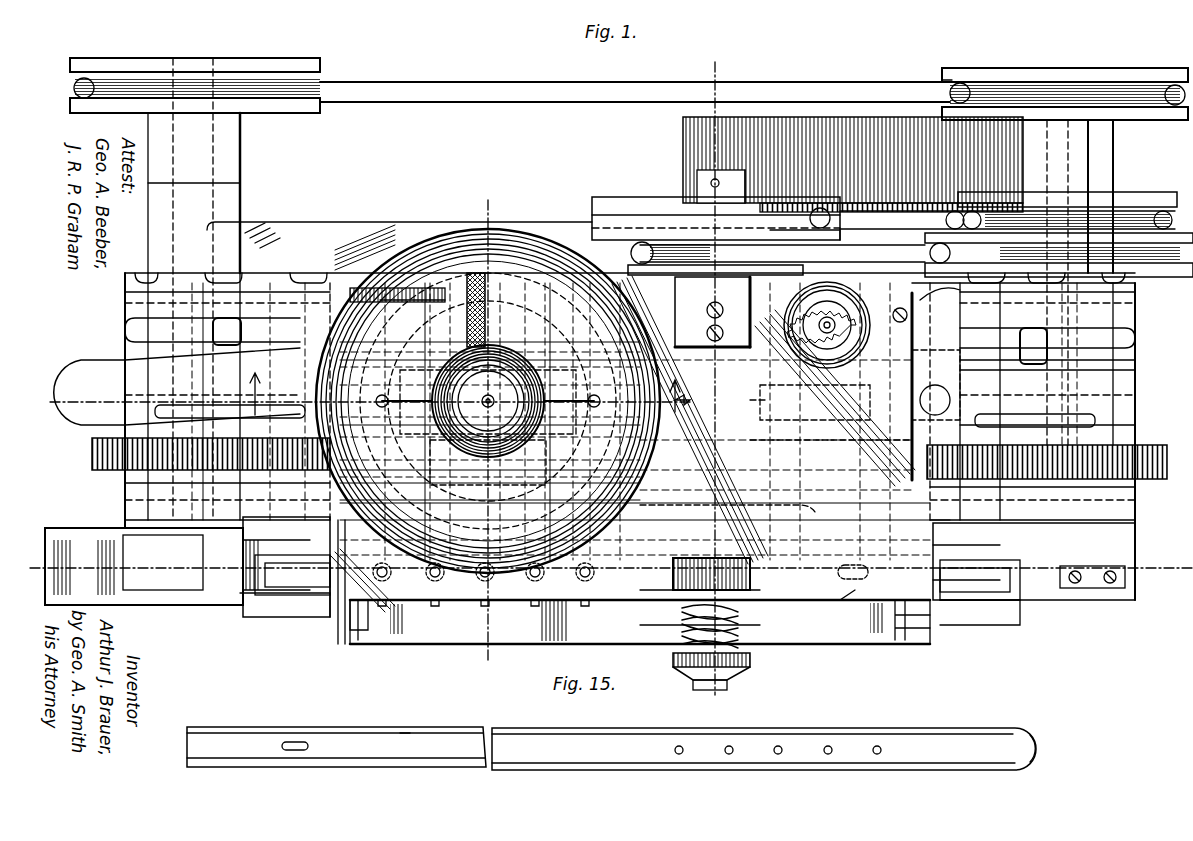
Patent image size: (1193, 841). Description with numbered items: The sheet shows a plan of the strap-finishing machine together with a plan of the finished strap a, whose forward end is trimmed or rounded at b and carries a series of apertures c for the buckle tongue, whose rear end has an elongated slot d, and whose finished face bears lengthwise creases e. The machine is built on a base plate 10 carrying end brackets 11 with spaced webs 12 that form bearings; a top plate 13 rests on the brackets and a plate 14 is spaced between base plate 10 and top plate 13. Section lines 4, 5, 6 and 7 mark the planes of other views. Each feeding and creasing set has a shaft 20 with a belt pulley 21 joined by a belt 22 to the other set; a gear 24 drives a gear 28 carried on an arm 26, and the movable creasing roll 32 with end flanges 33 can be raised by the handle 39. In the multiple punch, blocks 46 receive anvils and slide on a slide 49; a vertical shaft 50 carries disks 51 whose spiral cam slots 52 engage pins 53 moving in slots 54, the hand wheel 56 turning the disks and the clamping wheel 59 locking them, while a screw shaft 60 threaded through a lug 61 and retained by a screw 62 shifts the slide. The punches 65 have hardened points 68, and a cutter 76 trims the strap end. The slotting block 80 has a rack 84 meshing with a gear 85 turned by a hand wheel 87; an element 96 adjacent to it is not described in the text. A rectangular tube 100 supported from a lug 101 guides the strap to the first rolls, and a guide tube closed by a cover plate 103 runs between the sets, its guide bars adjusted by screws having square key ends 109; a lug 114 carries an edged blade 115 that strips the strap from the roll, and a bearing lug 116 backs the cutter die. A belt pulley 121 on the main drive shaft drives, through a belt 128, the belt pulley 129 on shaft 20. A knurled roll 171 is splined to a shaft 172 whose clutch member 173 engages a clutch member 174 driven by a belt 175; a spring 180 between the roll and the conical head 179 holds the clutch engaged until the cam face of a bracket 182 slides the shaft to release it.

In FIG. 1, the section line 4— 4 is at (611, 568).
In FIG. 1, the section line 5— 5 is at (485, 430).
In FIG. 1, the section line 6— 6 is at (370, 403).
In FIG. 1, the section line 7— 7 is at (712, 373).
In FIG. 1, the base plate 10 is at (272, 236).
In FIG. 1, the end brackets 11 is at (345, 282).
In FIG. 1, the spaced webs 12 is at (125, 300).
In FIG. 1, the top plate 13 is at (727, 519).
In FIG. 1, the plate 14 is at (848, 655).
In FIG. 1, the shaft 20 is at (205, 70).
In FIG. 1, the belt pulley 21 is at (318, 68).
In FIG. 1, the belt 22 is at (365, 84).
In FIG. 1, the gear 24 is at (92, 452).
In FIG. 1, the arm 26 is at (630, 359).
In FIG. 1, the gear 28 is at (290, 462).
In FIG. 1, the creasing roll 32 is at (300, 595).
In FIG. 1, the end flanges 33 is at (235, 600).
In FIG. 1, the handle 39 is at (177, 386).
In FIG. 1, the block 46 is at (548, 350).
In FIG. 1, the slide 49 is at (570, 355).
In FIG. 1, the vertical shaft 50 is at (492, 395).
In FIG. 1, the disks 51 is at (524, 462).
In FIG. 1, the spiral cam slots 52 is at (492, 395).
In FIG. 1, the pins 53 is at (600, 385).
In FIG. 1, the slots 54 is at (679, 382).
In FIG. 1, the hand wheel 56 is at (632, 245).
In FIG. 1, the clamping wheel 59 is at (520, 372).
In FIG. 1, the screw shaft 60 is at (430, 258).
In FIG. 1, the lug 61 is at (390, 286).
In FIG. 1, the screw 62 is at (360, 286).
In FIG. 1, the punches 65 is at (490, 304).
In FIG. 1, the hardened points 68 is at (430, 580).
In FIG. 1, the cutter 76 is at (680, 608).
In FIG. 1, the block 80 is at (845, 598).
In FIG. 1, the rack 84 is at (915, 340).
In FIG. 1, the gear 85 is at (858, 328).
In FIG. 1, the hand wheel 87 is at (792, 340).
In FIG. 1, the pin 96 is at (840, 578).
In FIG. 1, the tube 100 is at (144, 566).
In FIG. 1, the lug 101 is at (163, 562).
In FIG. 1, the top plate 103 is at (640, 622).
In FIG. 1, the square ends 109 is at (360, 632).
In FIG. 1, the lug 114 is at (1117, 568).
In FIG. 1, the edged blade 115 is at (1115, 575).
In FIG. 1, the bearing lug 116 is at (748, 458).
In FIG. 1, the belt pulley 121 is at (853, 164).
In FIG. 1, the belt 128 is at (1115, 215).
In FIG. 1, the belt pulley 129 is at (1145, 200).
In FIG. 1, the knurled roll 171 is at (752, 572).
In FIG. 1, the shaft 172 is at (700, 515).
In FIG. 1, the clutch member 173 is at (610, 205).
In FIG. 1, the clutch member 174 is at (630, 228).
In FIG. 1, the belt 175 is at (1150, 262).
In FIG. 1, the conical head 179 is at (750, 660).
In FIG. 1, the spring 180 is at (740, 630).
In FIG. 1, the bracket 182 is at (727, 685).
In FIG. 15, the strap a is at (940, 750).
In FIG. 15, the rounded forward end b is at (1038, 750).
In FIG. 15, the apertures c is at (776, 746).
In FIG. 15, the elongated slot d is at (305, 742).
In FIG. 15, the creases e is at (412, 758).